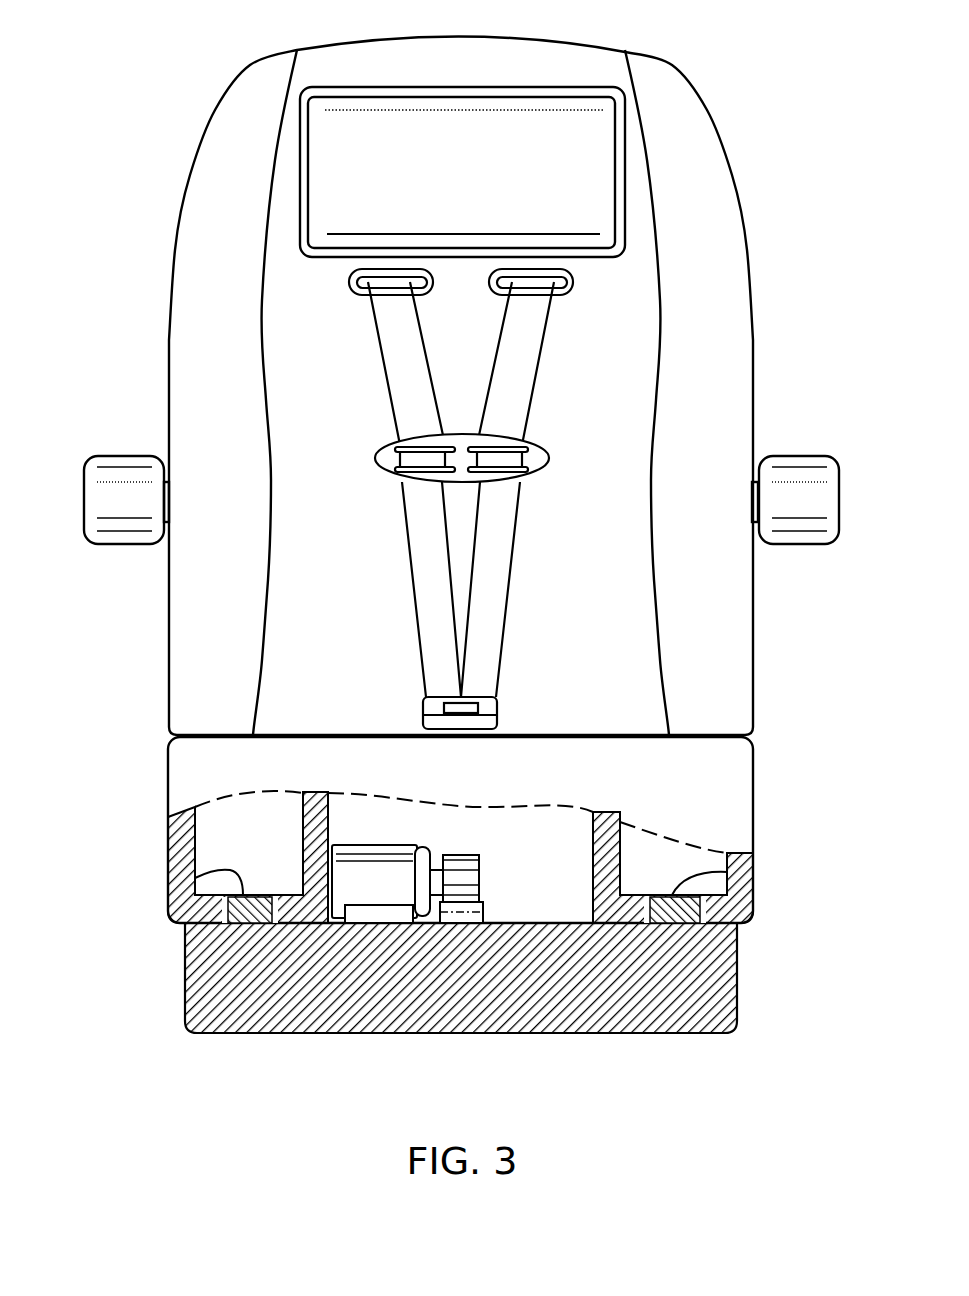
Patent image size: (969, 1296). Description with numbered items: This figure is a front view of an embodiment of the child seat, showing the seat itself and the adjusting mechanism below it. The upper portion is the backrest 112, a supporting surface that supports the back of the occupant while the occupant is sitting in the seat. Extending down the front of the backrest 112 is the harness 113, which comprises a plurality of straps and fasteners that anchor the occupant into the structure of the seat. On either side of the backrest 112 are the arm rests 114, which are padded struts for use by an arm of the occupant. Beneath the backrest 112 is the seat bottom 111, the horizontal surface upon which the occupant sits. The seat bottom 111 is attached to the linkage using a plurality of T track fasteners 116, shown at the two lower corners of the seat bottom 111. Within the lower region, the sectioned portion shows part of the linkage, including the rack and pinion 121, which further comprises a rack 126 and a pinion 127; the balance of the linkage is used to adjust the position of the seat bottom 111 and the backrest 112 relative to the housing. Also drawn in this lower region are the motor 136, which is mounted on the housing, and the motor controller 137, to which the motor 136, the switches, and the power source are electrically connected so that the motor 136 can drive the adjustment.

The seat bottom 111 is at (717, 785).
The backrest 112 is at (708, 225).
The harness 113 is at (513, 553).
The arm rests 114 is at (123, 456).
The T track fasteners 116 is at (168, 882).
The rack and pinion 121 is at (505, 863).
The rack 126 is at (483, 910).
The pinion 127 is at (480, 877).
The motor 136 is at (382, 852).
The motor controller 137 is at (385, 913).